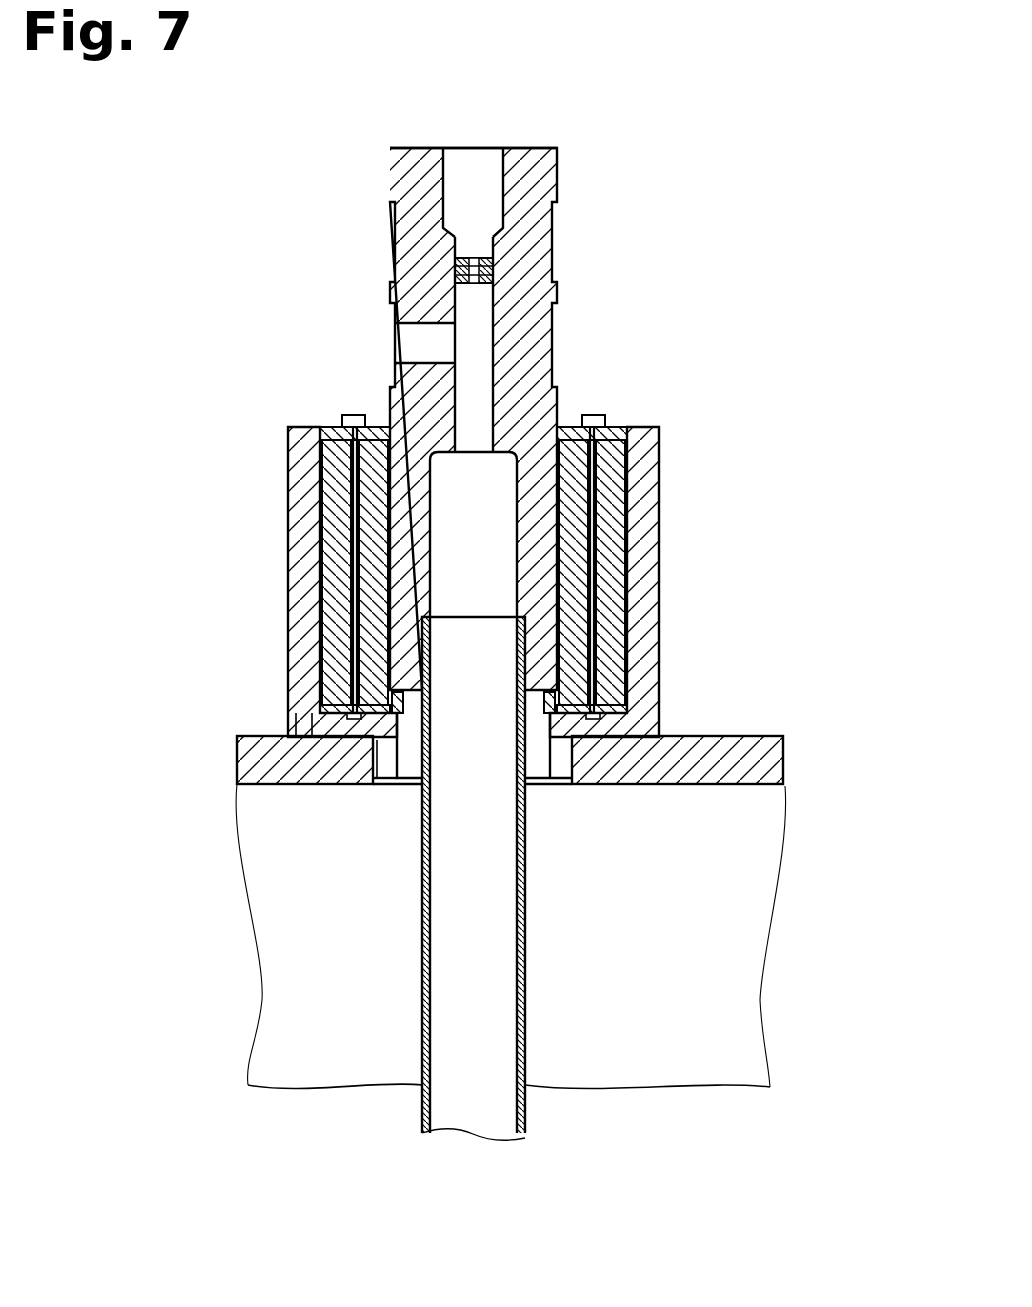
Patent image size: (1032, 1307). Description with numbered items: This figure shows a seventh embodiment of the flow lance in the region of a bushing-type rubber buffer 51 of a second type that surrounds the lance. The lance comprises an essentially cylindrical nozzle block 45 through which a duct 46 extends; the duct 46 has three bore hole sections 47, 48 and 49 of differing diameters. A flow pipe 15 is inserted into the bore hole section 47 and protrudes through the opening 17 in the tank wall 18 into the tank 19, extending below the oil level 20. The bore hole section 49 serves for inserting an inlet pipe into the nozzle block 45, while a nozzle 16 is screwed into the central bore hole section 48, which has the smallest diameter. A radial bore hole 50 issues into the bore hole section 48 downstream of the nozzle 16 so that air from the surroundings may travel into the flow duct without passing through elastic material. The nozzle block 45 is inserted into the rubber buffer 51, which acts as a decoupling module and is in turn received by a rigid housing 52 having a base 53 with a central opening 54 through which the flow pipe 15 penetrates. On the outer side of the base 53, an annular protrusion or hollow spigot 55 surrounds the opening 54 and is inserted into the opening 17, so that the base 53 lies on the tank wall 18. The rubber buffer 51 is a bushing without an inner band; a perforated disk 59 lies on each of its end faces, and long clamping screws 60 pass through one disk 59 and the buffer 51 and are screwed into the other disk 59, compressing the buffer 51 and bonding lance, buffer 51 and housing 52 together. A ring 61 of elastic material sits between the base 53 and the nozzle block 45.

The flow pipe 15 is at (527, 1105).
The nozzle 16 is at (490, 267).
The opening 17 is at (563, 786).
The tank wall 18 is at (770, 761).
The tank 19 is at (822, 908).
The oil level 20 is at (676, 1096).
The nozzle block 45 is at (520, 302).
The duct 46 is at (452, 140).
The bore hole section 47 is at (495, 535).
The bore hole section 48 is at (478, 346).
The bore hole section 49 is at (488, 168).
The radial bore hole 50 is at (413, 345).
The rubber buffer 51 is at (607, 570).
The housing 52 is at (647, 497).
The base 53 is at (308, 728).
The opening 54 is at (398, 755).
The annular protrusion or hollow spigot 55 is at (372, 778).
The perforated disk 59 is at (333, 427).
The clamping screw 60 is at (350, 600).
The ring 61 is at (390, 692).